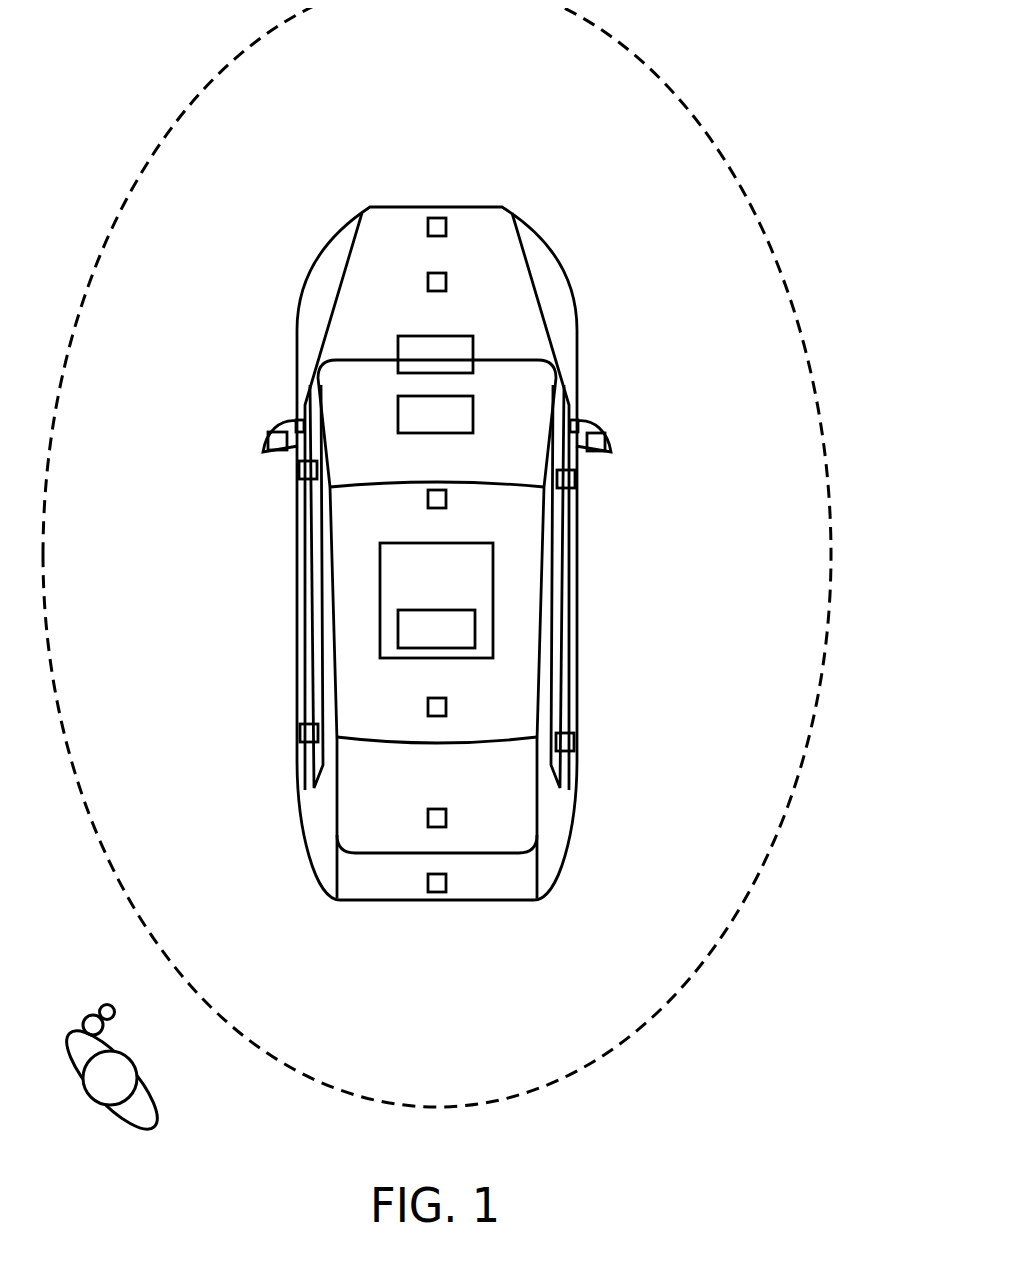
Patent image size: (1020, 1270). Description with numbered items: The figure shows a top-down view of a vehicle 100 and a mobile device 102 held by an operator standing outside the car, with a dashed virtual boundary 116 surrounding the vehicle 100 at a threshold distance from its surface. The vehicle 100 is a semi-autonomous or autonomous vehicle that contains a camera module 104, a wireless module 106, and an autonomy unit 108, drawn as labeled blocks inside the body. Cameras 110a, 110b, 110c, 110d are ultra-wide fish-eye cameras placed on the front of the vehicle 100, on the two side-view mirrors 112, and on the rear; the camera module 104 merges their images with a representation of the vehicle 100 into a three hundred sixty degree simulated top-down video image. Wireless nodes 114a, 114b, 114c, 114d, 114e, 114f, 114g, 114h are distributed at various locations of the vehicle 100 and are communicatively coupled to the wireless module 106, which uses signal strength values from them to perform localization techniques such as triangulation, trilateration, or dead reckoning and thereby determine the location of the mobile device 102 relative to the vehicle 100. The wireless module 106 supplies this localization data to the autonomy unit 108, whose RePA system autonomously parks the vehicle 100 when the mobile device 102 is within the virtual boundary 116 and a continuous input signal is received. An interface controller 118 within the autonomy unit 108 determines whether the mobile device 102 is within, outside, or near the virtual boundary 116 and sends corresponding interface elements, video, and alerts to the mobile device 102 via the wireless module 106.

The vehicle 100 is at (562, 252).
The mobile device 102 is at (114, 1008).
The camera module 104 is at (473, 337).
The wireless module 106 is at (473, 398).
The autonomy unit 108 is at (461, 598).
The camera 110a is at (437, 217).
The camera 110b is at (596, 433).
The camera 110c is at (278, 432).
The camera 110d is at (428, 882).
The side-view mirror 112 is at (263, 450).
The wireless node 114a is at (470, 268).
The wireless node 114b is at (575, 478).
The wireless node 114c is at (299, 469).
The wireless node 114d is at (300, 733).
The wireless node 114e is at (574, 741).
The wireless node 114f is at (446, 817).
The wireless node 114g is at (446, 499).
The wireless node 114h is at (446, 706).
The virtual boundary 116 is at (831, 578).
The interface controller 118 is at (436, 629).